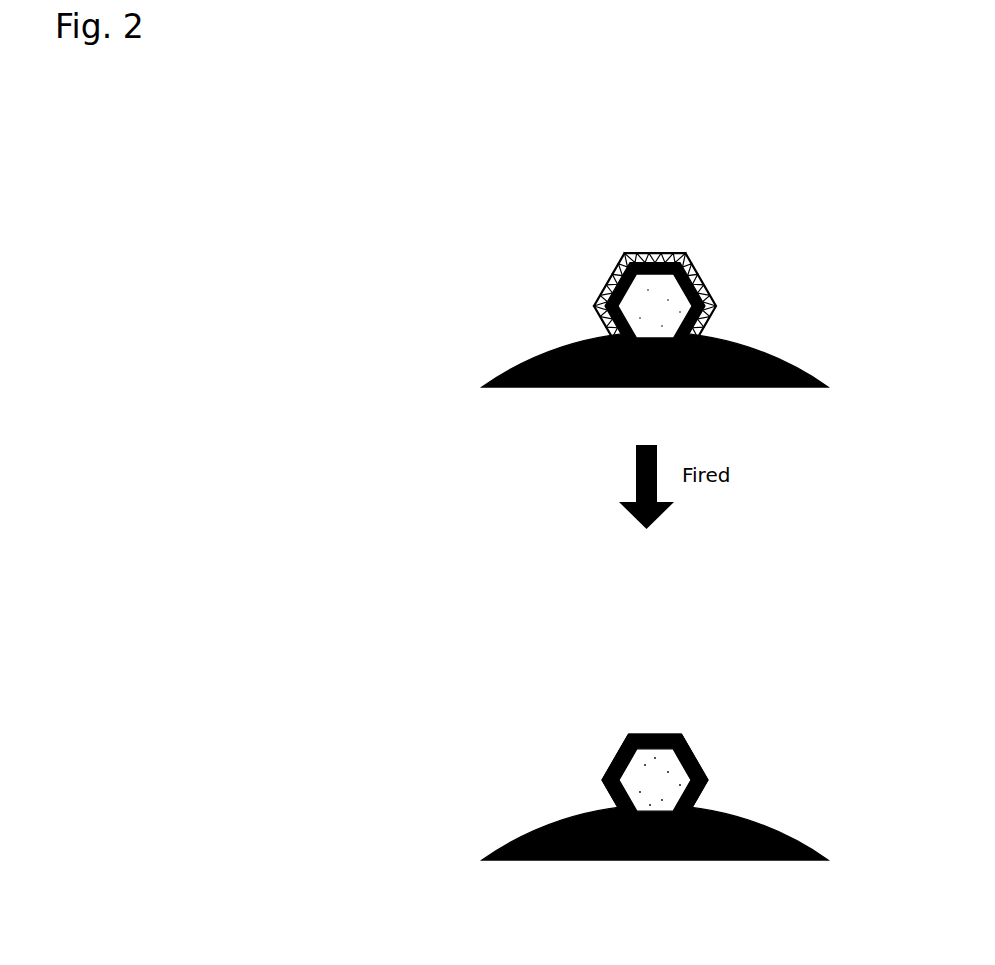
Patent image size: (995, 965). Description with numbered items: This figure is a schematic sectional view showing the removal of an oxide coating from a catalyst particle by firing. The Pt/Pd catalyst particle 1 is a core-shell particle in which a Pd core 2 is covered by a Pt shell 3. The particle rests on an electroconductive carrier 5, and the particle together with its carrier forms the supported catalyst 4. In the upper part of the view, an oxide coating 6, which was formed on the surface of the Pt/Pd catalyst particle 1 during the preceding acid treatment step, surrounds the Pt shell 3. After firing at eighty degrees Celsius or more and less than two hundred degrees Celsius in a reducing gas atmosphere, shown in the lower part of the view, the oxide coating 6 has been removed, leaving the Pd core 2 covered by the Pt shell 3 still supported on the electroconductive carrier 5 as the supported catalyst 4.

The Pt/Pd catalyst particle 1 is at (680, 262).
The Pd core 2 is at (643, 303).
The Pt shell 3 is at (711, 270).
The supported catalyst 4 is at (716, 160).
The electroconductive carrier 5 is at (540, 343).
The oxide coating 6 is at (656, 254).